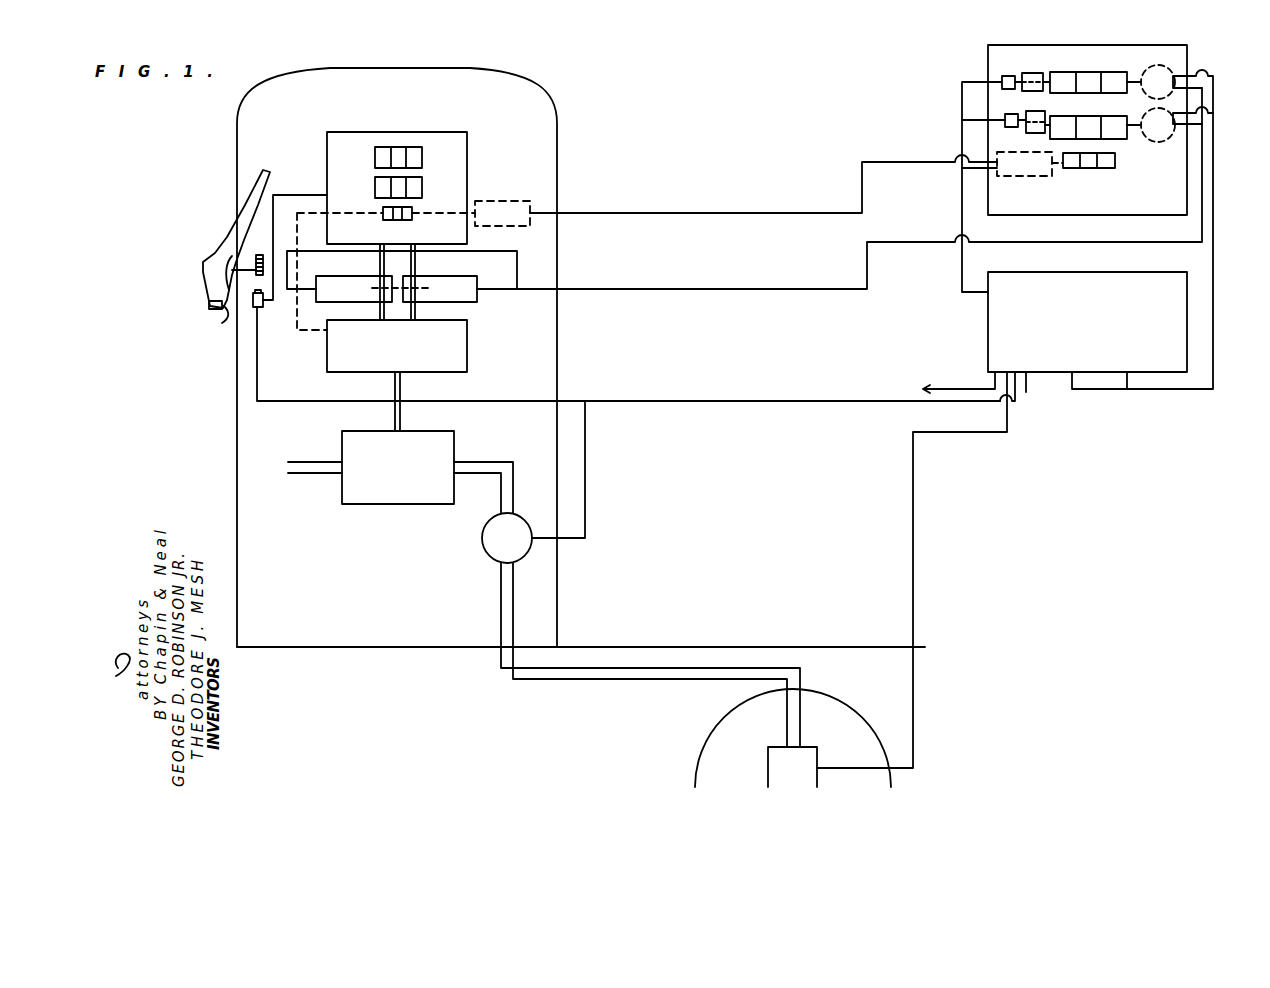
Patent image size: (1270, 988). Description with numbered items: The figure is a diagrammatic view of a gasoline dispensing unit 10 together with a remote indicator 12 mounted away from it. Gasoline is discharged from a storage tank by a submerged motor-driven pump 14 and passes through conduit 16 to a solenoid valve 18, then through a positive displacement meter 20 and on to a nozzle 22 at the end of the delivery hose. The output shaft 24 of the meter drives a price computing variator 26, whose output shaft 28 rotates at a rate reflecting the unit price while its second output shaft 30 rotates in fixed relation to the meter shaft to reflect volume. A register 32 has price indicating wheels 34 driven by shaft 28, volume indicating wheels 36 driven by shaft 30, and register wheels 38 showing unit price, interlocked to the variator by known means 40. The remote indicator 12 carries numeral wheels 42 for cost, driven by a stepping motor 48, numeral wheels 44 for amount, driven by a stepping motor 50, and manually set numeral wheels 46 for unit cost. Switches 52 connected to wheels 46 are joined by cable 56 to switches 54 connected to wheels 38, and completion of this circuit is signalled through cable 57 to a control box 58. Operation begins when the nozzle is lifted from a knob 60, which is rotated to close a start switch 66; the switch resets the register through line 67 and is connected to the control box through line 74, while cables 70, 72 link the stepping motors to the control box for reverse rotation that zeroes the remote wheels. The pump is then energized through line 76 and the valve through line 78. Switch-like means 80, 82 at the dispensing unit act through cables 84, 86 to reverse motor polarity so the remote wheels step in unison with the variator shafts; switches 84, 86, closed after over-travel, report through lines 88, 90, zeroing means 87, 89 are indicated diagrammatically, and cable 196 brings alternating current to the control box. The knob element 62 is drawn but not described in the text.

The gasoline dispensing unit 10 is at (621, 157).
The remote indicator 12 is at (927, 82).
The motor-driven pump 14 is at (813, 747).
The conduit 16 is at (603, 681).
The solenoid valve 18 is at (488, 560).
The meter 20 is at (381, 505).
The nozzle 22 is at (232, 217).
The output shaft 24 is at (400, 423).
The price computing variator 26 is at (467, 362).
The output shaft 28 is at (380, 307).
The second output shaft 30 is at (415, 307).
The register 32 is at (368, 104).
The price indicating wheels 34 is at (422, 160).
The volume indicating wheels 36 is at (422, 190).
The register wheels 38 is at (404, 220).
The interlock means 40 is at (298, 255).
The numeral wheels 42 is at (1059, 72).
The numeral wheels 44 is at (1062, 116).
The numeral wheels 46 is at (1108, 168).
The stepping motor 48 is at (1148, 70).
The stepping motor 50 is at (1150, 145).
The switches 52 is at (1035, 177).
The switches 54 is at (500, 228).
The cable 56 is at (661, 212).
The cable 57 is at (968, 172).
The control box 58 is at (1098, 273).
The knob 60 is at (222, 322).
The nozzle switch knob 62 is at (259, 256).
The start switch 66 is at (253, 308).
The line 67 is at (286, 198).
The cable 70 is at (1208, 78).
The cable 72 is at (1213, 117).
The line 74 is at (242, 398).
The line 76 is at (913, 521).
The line 78 is at (585, 522).
The switch-like means 80 is at (372, 276).
The switch-like means 82 is at (440, 271).
The cable 84 is at (518, 278).
The cable 86 is at (506, 302).
The zeroing means 87 is at (1025, 73).
The line 88 is at (962, 100).
The zeroing means 89 is at (1033, 133).
The line 90 is at (963, 120).
The cable 196 is at (968, 370).